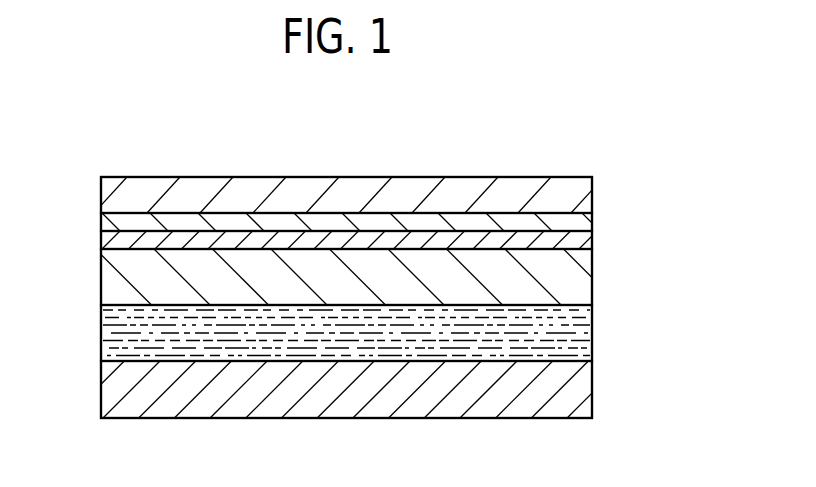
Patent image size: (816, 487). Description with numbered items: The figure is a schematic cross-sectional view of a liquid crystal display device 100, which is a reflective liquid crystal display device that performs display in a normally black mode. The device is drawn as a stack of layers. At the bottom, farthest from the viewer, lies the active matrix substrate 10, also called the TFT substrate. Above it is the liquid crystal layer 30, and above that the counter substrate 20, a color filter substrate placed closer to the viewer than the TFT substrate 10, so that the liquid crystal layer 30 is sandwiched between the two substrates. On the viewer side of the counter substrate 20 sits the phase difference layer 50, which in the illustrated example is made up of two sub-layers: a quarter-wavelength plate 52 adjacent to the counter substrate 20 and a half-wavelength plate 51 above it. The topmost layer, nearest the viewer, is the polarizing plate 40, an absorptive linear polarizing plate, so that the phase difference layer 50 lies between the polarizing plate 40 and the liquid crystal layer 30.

The liquid crystal display device 100 is at (600, 135).
The active matrix substrate 10 is at (87, 365).
The counter substrate 20 is at (87, 253).
The liquid crystal layer 30 is at (87, 308).
The polarizing plate 40 is at (101, 200).
The phase difference layer 50 is at (413, 229).
The half-wavelength plate 51 is at (586, 223).
The quarter-wavelength plate 52 is at (586, 242).